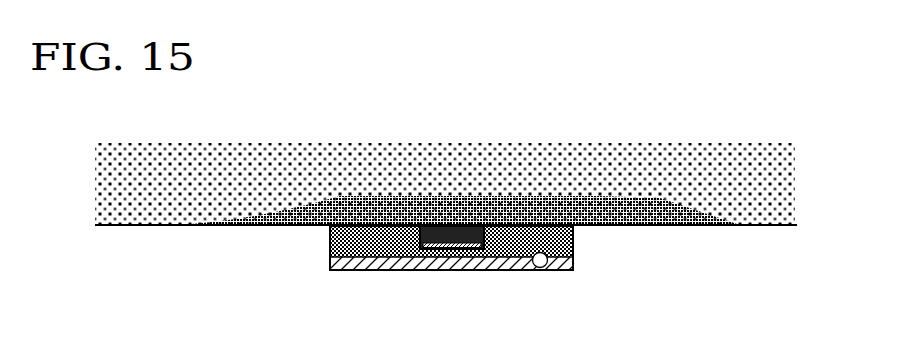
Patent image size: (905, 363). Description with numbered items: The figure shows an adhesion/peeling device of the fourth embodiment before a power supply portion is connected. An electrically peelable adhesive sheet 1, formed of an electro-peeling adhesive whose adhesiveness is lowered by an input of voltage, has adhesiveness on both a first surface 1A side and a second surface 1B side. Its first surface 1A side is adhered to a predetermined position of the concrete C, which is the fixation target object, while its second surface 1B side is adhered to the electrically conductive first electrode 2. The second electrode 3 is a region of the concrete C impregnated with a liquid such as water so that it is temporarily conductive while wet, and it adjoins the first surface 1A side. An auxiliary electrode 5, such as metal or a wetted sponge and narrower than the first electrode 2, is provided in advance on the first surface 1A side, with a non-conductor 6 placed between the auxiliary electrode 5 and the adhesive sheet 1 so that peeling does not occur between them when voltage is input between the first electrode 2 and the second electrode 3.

The electrically peelable adhesive sheet 1 is at (330, 240).
The first surface 1A is at (521, 226).
The second surface 1B is at (548, 256).
The first electrode 2 is at (348, 272).
The second electrode 3 is at (633, 210).
The auxiliary electrode 5 is at (462, 233).
The non-conductor 6 is at (438, 244).
The concrete C is at (762, 226).